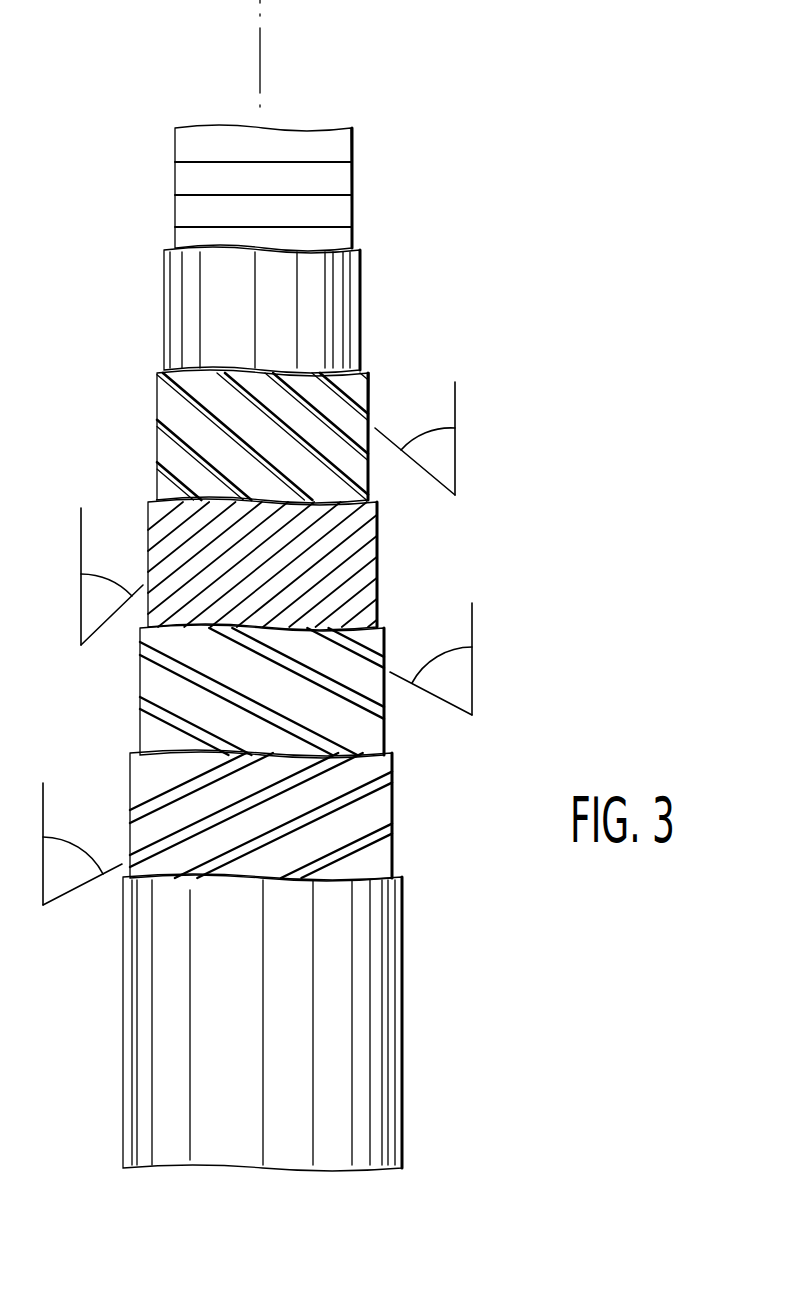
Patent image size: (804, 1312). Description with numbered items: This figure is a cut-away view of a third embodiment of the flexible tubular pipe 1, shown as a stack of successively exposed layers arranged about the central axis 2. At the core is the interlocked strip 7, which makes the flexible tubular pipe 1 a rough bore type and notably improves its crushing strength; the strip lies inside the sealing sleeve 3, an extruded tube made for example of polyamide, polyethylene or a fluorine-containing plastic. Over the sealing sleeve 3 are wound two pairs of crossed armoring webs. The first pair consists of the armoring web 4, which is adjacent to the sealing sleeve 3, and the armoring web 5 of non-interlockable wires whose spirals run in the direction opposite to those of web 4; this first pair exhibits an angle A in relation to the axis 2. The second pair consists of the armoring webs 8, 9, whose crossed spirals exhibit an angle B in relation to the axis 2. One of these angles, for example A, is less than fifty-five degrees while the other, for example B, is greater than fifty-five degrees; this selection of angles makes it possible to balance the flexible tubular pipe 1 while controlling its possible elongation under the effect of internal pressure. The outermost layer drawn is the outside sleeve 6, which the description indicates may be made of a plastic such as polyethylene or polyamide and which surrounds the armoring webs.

The flexible tubular pipe 1 is at (440, 955).
The axis 2 is at (260, 42).
The sealing sleeve 3 is at (343, 308).
The armoring web 4 is at (157, 437).
The armoring web 5 is at (377, 560).
The outer jacket 6 is at (382, 1088).
The interlocked strip 7 is at (352, 180).
The armoring web 8 is at (141, 680).
The armoring web 9 is at (392, 800).